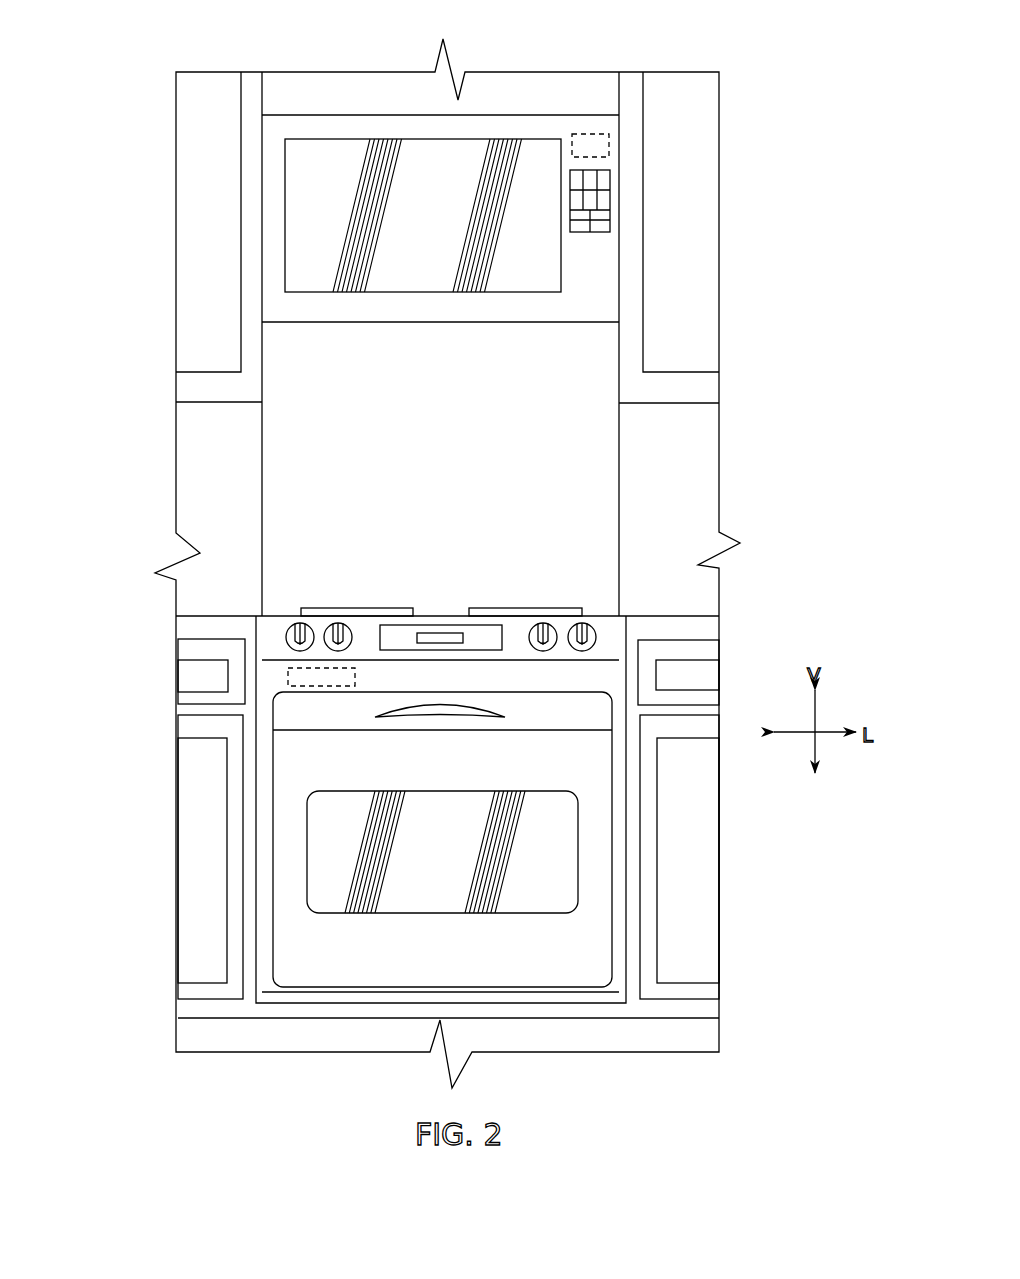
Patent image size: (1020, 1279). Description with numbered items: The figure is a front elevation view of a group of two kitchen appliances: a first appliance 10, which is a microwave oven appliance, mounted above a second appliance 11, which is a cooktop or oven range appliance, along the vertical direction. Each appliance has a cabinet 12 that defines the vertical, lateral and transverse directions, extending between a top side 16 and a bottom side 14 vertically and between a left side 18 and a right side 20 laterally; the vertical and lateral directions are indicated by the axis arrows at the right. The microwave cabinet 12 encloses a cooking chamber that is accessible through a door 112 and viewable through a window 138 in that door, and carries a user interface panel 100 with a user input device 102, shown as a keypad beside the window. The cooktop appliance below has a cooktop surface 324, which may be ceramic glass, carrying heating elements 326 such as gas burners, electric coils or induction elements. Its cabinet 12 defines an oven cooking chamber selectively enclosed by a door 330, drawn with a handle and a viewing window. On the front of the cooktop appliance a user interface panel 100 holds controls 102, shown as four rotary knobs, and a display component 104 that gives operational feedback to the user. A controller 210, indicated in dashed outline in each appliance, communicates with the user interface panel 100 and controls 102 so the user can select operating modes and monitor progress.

The first appliance 10 is at (130, 46).
The second appliance 11 is at (248, 796).
The cabinet 12 is at (605, 311).
The bottom side 14 is at (498, 323).
The top side 16 is at (361, 110).
The left side 18 is at (260, 247).
The right side 20 is at (624, 257).
The user interface panel 100 is at (603, 293).
The user input device 102 is at (608, 203).
The display component 104 is at (380, 633).
The door 112 is at (589, 126).
The window 138 is at (308, 206).
The controller 210 is at (609, 143).
The cooktop surface 324 is at (273, 612).
The heating elements 326 is at (483, 609).
The door 330 is at (597, 868).